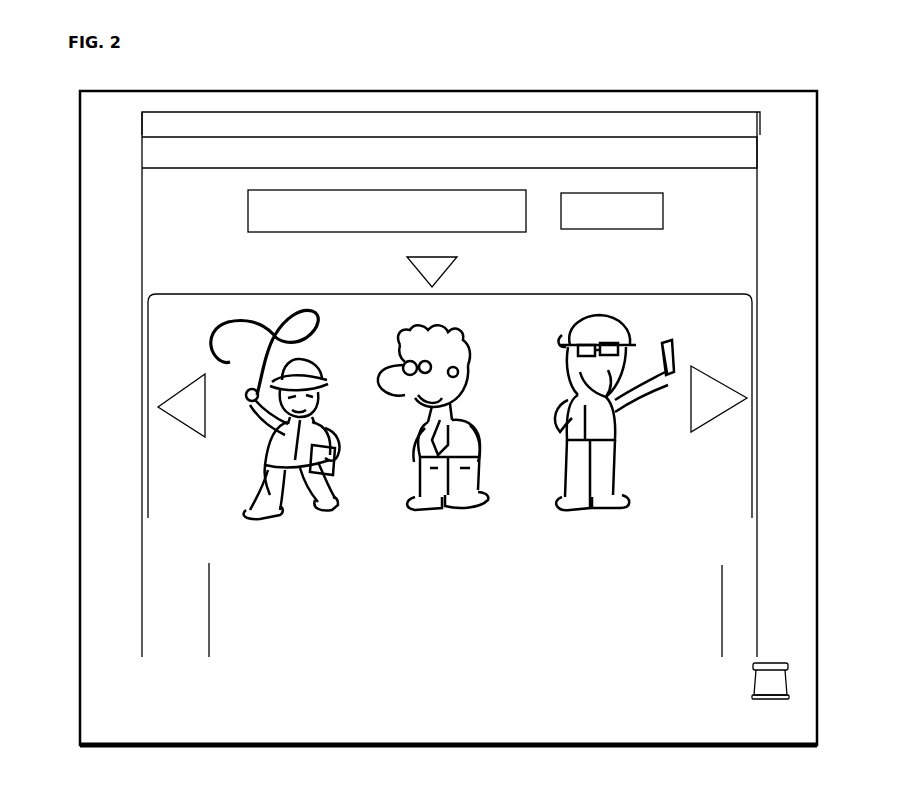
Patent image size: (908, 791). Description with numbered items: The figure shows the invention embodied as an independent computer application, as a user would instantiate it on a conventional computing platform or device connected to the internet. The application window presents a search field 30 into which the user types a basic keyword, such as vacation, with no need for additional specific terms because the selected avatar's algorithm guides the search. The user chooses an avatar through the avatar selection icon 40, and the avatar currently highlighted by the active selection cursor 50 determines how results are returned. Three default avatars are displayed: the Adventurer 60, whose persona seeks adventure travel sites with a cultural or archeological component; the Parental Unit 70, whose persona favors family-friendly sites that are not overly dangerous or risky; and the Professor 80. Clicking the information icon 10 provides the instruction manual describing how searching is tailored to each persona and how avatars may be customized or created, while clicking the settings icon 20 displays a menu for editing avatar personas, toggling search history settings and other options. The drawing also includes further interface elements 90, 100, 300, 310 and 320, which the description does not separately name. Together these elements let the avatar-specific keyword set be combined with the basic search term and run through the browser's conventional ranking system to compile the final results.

The information icon 10 is at (720, 152).
The settings icon 20 is at (607, 150).
The search field 30 is at (297, 216).
The avatar selection icon 40 is at (430, 265).
The selection cursor 50 is at (173, 332).
The Adventurer avatar 60 is at (258, 472).
The Parental Unit avatar 70 is at (482, 498).
The Professor avatar 80 is at (618, 464).
The scroll arrows 90 is at (178, 394).
The search button 100 is at (648, 215).
The saved searches menu item 300 is at (346, 152).
The title bar 310 is at (226, 122).
The site rankings results area 320 is at (250, 585).